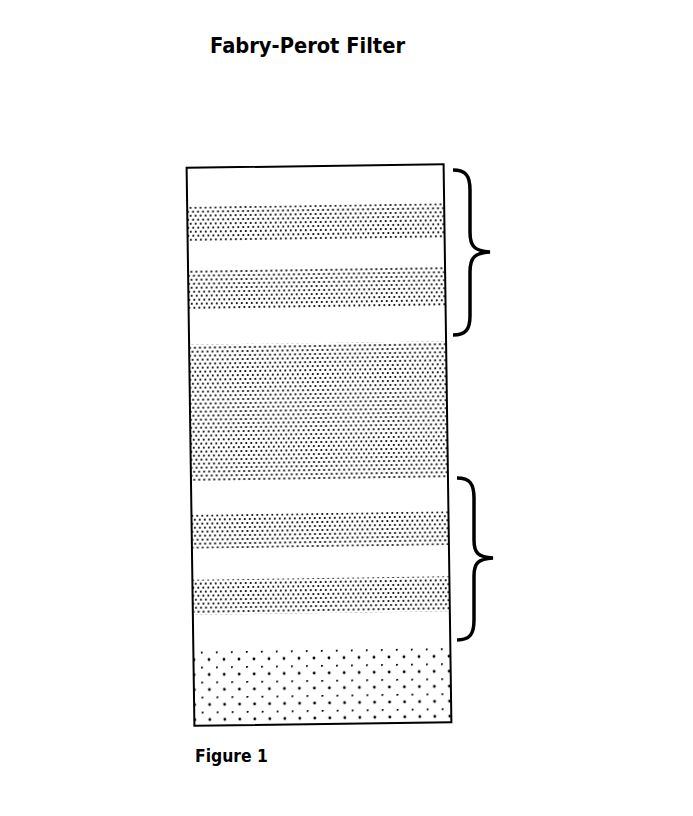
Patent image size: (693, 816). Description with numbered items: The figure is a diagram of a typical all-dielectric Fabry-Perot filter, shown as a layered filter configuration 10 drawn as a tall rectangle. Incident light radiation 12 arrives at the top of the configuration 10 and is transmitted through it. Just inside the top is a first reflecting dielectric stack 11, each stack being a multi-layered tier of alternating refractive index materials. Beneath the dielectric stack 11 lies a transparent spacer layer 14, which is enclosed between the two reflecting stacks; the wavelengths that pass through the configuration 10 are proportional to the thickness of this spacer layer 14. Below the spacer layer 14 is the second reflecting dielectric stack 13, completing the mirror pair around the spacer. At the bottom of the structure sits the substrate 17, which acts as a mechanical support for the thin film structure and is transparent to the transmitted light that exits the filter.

The filter configuration 10 is at (174, 265).
The reflecting dielectric stack 11 is at (407, 252).
The incident light radiation 12 is at (311, 121).
The reflecting dielectric stack 13 is at (421, 559).
The transparent spacer layer 14 is at (418, 415).
The substrate 17 is at (428, 684).